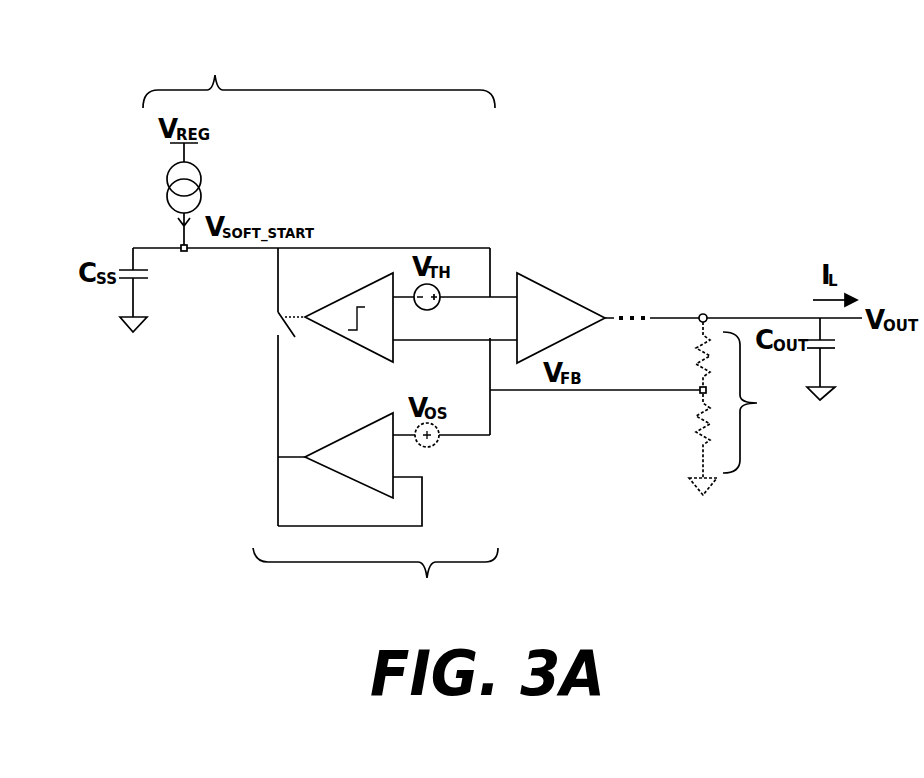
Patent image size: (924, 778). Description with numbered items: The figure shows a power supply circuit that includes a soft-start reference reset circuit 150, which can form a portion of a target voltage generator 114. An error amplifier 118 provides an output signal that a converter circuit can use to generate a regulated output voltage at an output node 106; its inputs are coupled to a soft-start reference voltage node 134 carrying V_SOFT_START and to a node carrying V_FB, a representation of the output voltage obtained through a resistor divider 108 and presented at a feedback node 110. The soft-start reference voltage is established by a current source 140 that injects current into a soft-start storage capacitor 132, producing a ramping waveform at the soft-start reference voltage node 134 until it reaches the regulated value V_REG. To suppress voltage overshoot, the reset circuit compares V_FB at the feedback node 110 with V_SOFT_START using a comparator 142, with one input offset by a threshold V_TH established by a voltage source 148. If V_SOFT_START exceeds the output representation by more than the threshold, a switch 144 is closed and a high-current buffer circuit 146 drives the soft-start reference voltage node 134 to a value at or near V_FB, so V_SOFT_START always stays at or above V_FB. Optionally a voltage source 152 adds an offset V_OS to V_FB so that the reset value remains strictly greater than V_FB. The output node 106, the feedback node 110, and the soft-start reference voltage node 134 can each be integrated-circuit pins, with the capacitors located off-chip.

The output node 106 is at (706, 315).
The resistor divider 108 is at (744, 408).
The feedback node 110 is at (700, 393).
The target voltage generator 114 is at (319, 76).
The error amplifier 118 is at (557, 290).
The soft-start storage capacitor 132 is at (148, 279).
The soft-start reference voltage node 134 is at (180, 246).
The current source 140 is at (168, 193).
The comparator 142 is at (358, 287).
The switch 144 is at (278, 313).
The high-current buffer circuit 146 is at (337, 441).
The voltage source 148 is at (427, 311).
The soft-start reference reset circuit 150 is at (375, 582).
The voltage source 152 is at (438, 445).